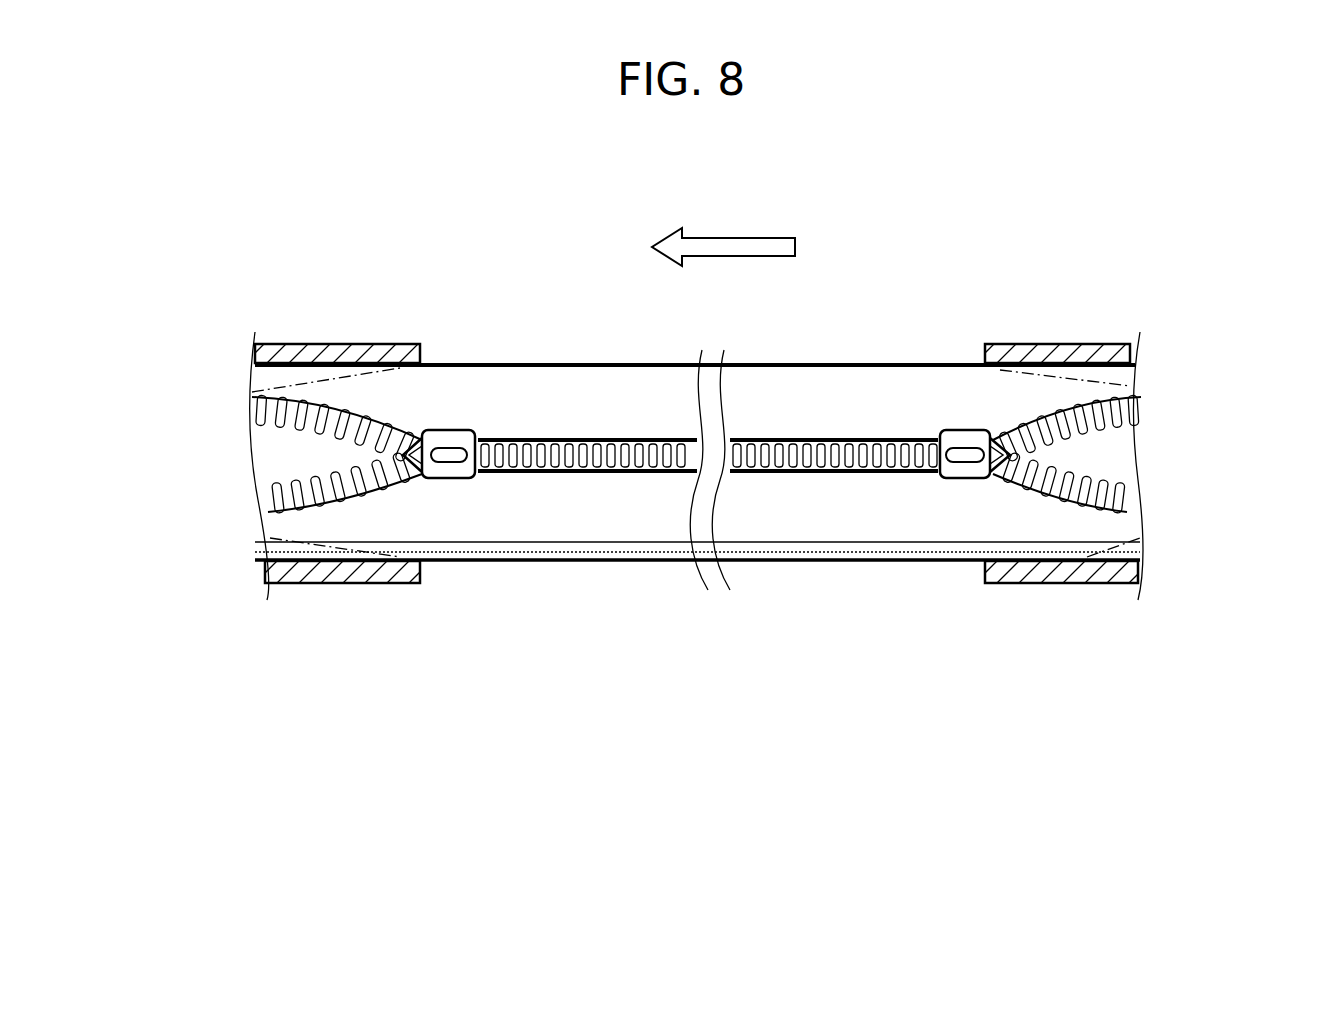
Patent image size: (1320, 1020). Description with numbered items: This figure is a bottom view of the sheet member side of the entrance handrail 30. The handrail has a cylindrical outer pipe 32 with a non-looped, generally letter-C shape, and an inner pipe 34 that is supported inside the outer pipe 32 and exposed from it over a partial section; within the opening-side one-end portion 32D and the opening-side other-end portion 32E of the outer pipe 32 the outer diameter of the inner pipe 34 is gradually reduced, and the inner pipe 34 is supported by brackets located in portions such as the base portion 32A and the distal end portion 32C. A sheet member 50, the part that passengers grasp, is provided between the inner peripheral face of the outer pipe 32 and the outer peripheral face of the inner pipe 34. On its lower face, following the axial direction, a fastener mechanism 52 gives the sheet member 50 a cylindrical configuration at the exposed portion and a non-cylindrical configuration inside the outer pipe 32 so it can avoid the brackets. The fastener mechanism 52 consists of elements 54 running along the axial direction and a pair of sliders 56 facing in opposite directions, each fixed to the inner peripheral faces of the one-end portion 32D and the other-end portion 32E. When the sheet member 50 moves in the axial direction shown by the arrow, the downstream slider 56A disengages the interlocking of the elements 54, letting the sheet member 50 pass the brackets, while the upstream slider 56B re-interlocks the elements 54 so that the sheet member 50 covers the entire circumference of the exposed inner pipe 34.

The entrance handrail 30 is at (905, 345).
The outer pipe 32 is at (714, 405).
The base portion 32A is at (285, 343).
The distal end portion 32C is at (1110, 343).
The opening-side one-end portion 32D is at (410, 343).
The opening-side other-end portion 32E is at (1008, 343).
The inner pipe 34 is at (308, 458).
The sheet member 50 is at (702, 464).
The fastener mechanism 52 is at (800, 425).
The elements 54 is at (280, 436).
The sliders 56 is at (706, 553).
The slider on the downstream side 56A is at (455, 468).
The slider on the upstream side 56B is at (965, 468).